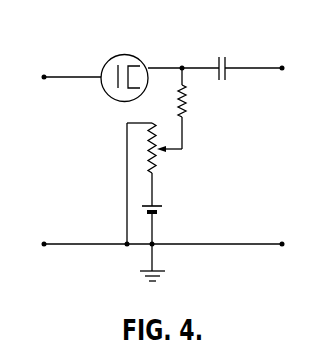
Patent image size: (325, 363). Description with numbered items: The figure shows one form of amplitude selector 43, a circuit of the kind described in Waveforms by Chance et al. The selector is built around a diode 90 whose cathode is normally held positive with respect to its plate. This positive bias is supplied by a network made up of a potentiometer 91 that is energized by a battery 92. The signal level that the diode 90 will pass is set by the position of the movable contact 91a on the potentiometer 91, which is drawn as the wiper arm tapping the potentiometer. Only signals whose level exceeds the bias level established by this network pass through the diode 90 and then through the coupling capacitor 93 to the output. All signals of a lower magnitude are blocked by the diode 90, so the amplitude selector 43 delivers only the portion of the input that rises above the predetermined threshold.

The amplitude selector 43 is at (176, 38).
The diode 90 is at (106, 65).
The potentiometer 91 is at (156, 167).
The movable contact 91a is at (170, 143).
The battery 92 is at (162, 207).
The coupling capacitor 93 is at (226, 64).